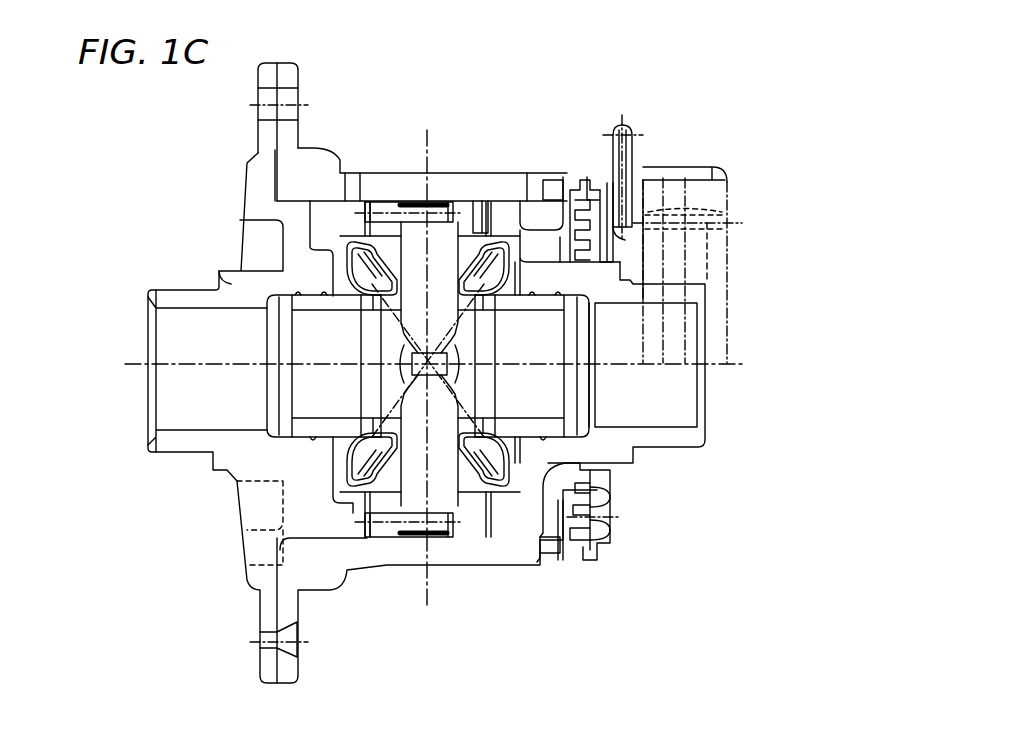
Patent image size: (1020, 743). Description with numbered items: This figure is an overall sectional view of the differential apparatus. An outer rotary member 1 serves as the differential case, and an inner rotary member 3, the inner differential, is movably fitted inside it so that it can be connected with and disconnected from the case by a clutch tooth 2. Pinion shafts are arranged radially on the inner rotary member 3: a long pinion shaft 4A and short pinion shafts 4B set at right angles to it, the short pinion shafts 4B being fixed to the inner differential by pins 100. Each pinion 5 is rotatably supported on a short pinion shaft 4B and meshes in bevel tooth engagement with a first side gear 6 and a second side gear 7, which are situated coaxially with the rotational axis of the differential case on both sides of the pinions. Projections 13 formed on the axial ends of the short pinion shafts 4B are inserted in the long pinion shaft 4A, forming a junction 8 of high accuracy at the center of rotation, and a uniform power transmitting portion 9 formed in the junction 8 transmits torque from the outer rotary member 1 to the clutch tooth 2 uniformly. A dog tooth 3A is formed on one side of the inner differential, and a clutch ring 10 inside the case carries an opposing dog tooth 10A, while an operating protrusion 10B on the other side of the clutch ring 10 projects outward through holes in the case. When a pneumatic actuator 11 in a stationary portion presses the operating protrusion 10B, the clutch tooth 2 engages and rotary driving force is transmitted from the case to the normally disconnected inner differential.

The outer rotary member 1 is at (390, 175).
The clutch tooth 2 is at (478, 198).
The inner rotary member 3 is at (378, 205).
The dog tooth 3A is at (458, 200).
The long pinion shaft 4A is at (462, 397).
The short pinion shaft 4B is at (414, 205).
The pinion 5 is at (370, 272).
The first side gear 6 is at (345, 270).
The second side gear 7 is at (507, 298).
The junction 8 is at (445, 434).
The uniform power transmitting portion 9 is at (412, 353).
The clutch ring 10 is at (527, 205).
The dog tooth 10A is at (488, 208).
The operating protrusion 10B is at (550, 203).
The pneumatic actuator 11 is at (640, 165).
The projection 13 is at (415, 372).
The pin 100 is at (428, 203).